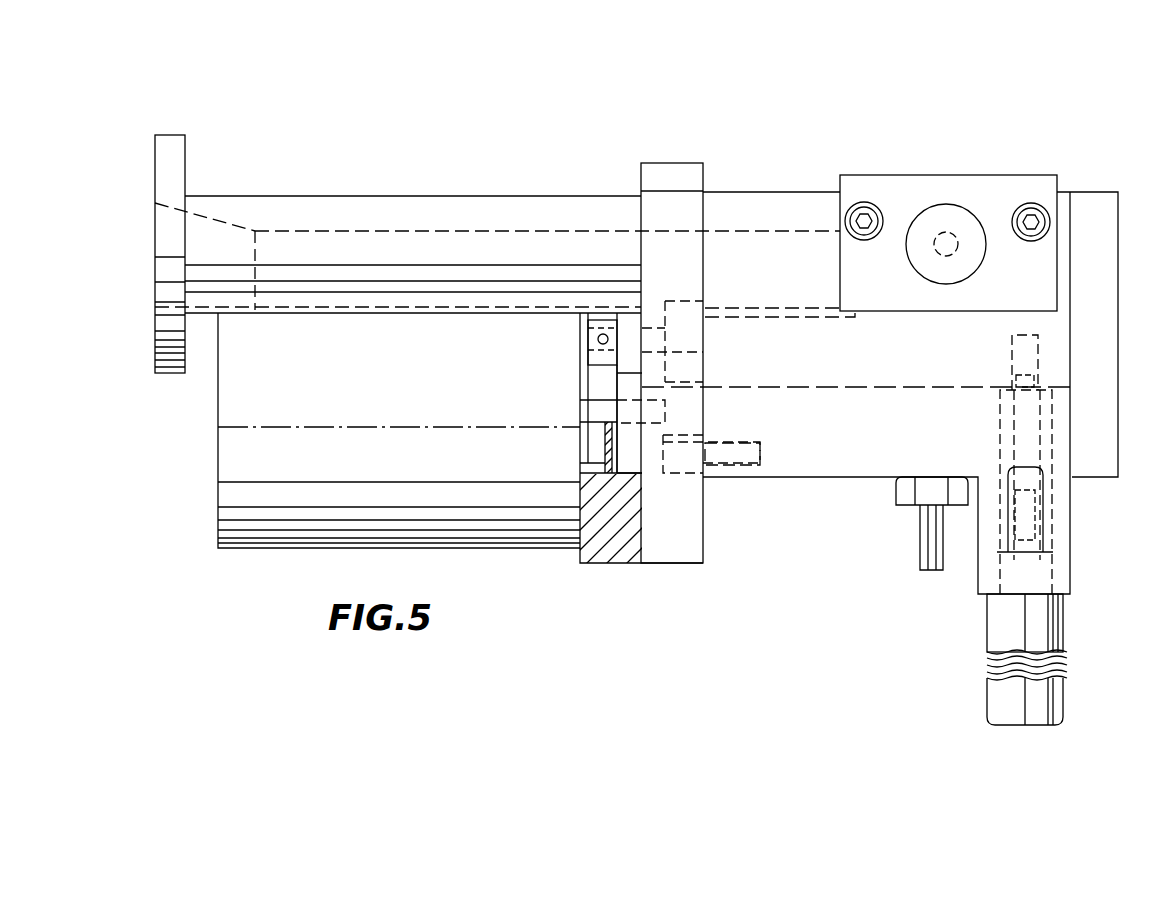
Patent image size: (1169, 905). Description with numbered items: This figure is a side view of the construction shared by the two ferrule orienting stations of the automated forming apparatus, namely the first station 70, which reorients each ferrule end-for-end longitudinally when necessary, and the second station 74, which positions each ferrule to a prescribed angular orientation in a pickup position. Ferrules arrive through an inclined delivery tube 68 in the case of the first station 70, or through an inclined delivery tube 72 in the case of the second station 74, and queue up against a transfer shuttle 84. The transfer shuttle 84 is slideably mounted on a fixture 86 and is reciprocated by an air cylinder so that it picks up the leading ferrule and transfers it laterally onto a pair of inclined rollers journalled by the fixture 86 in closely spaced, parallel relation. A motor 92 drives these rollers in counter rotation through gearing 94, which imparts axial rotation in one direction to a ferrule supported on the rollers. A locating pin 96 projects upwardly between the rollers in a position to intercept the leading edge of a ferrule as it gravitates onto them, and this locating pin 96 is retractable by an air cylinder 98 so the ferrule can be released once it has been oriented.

The inclined delivery tube 68 is at (497, 251).
The inclined delivery tube 72 is at (375, 202).
The first station 70 is at (880, 315).
The second station 74 is at (782, 117).
The transfer shuttle 84 is at (892, 197).
The fixture 86 is at (697, 213).
The motor 92 is at (478, 462).
The gearing 94 is at (630, 388).
The locating pin 96 is at (1025, 423).
The air cylinder 98 is at (990, 616).